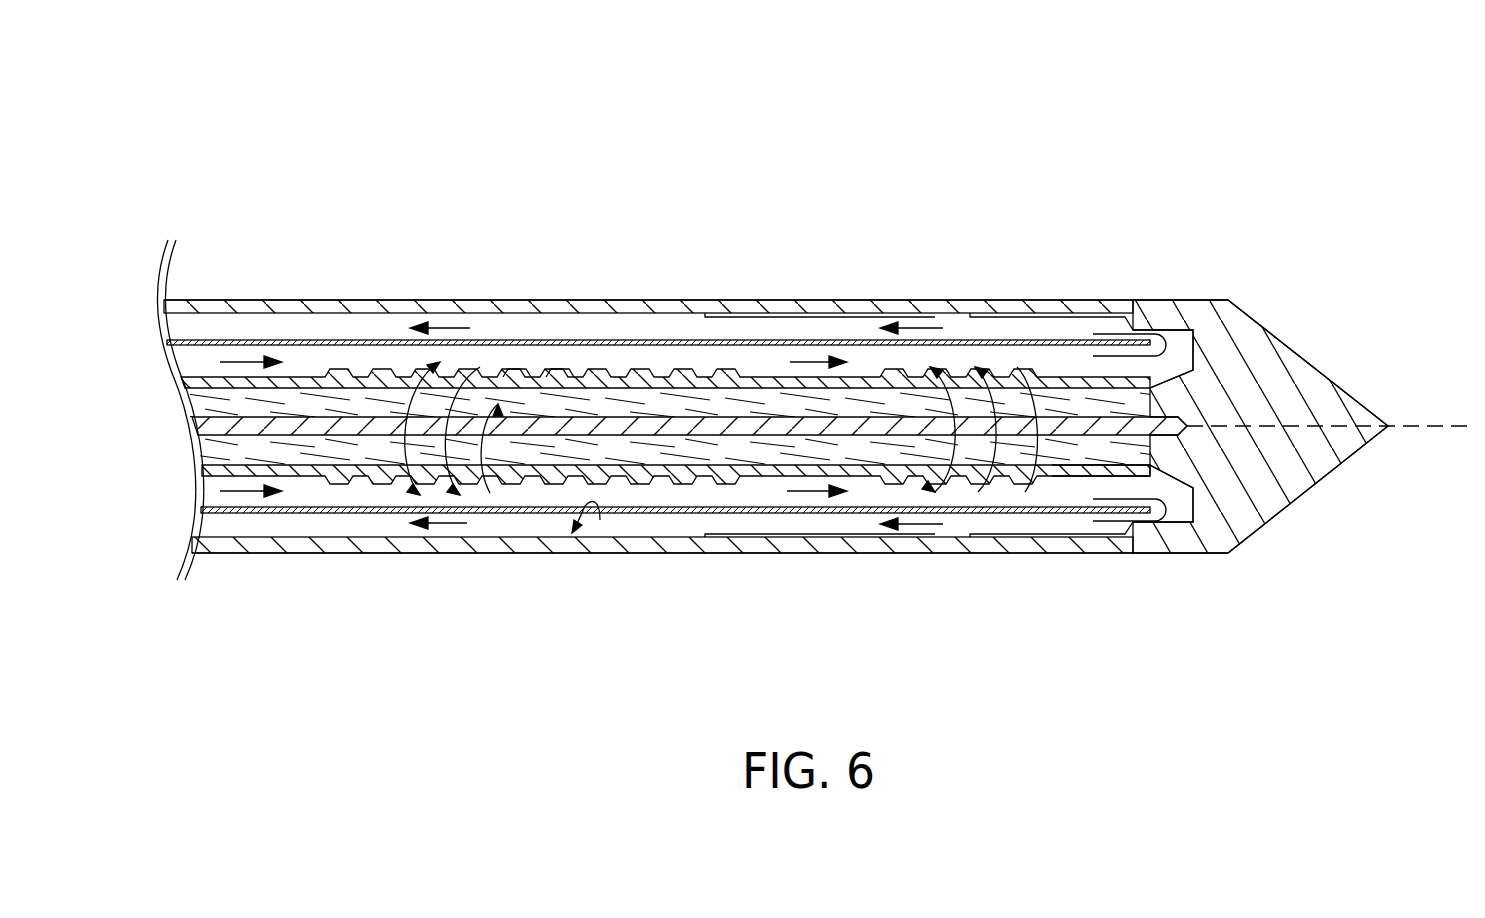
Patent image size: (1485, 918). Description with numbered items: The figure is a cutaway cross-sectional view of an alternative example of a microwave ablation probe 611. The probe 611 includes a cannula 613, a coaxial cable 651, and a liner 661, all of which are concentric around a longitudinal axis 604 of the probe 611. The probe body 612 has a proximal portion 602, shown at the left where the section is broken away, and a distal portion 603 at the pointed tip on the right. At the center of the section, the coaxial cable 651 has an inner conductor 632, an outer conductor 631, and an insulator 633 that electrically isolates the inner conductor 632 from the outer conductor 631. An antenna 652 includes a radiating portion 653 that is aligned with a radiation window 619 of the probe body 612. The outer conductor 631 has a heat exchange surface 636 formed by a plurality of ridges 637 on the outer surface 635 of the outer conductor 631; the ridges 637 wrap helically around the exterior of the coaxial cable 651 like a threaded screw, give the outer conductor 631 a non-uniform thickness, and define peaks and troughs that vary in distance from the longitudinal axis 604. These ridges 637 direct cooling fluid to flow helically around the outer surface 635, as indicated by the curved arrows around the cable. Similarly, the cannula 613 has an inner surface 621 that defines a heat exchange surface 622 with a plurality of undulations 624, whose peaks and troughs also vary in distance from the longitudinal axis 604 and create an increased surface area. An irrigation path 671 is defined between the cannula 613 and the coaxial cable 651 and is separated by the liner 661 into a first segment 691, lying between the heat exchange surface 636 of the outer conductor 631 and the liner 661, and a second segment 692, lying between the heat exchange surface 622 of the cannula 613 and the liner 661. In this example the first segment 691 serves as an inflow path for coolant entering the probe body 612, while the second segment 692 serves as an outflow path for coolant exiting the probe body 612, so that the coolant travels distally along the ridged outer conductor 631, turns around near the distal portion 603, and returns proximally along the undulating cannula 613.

The proximal portion 602 is at (277, 207).
The probe 611 is at (396, 185).
The distal portion 603 is at (1333, 216).
The probe body 612 is at (1167, 287).
The longitudinal axis 604 is at (1445, 428).
The radiation window 619 is at (913, 300).
The cannula 613 is at (392, 548).
The liner 661 is at (231, 342).
The outer surface 635 is at (337, 378).
The heat exchange surface 636 is at (392, 378).
The ridges 637 is at (513, 376).
The coaxial cable 651 is at (638, 397).
The antenna 652 is at (777, 397).
The radiating portion 653 is at (853, 397).
The irrigation path 671 is at (197, 366).
The first segment 691 is at (220, 503).
The second segment 692 is at (228, 537).
The inner surface 621 is at (600, 520).
The outer conductor 631 is at (652, 473).
The insulator 633 is at (737, 456).
The heat exchange surface 622 is at (1077, 515).
The inner conductor 632 is at (1127, 471).
The undulations 624 is at (1177, 521).